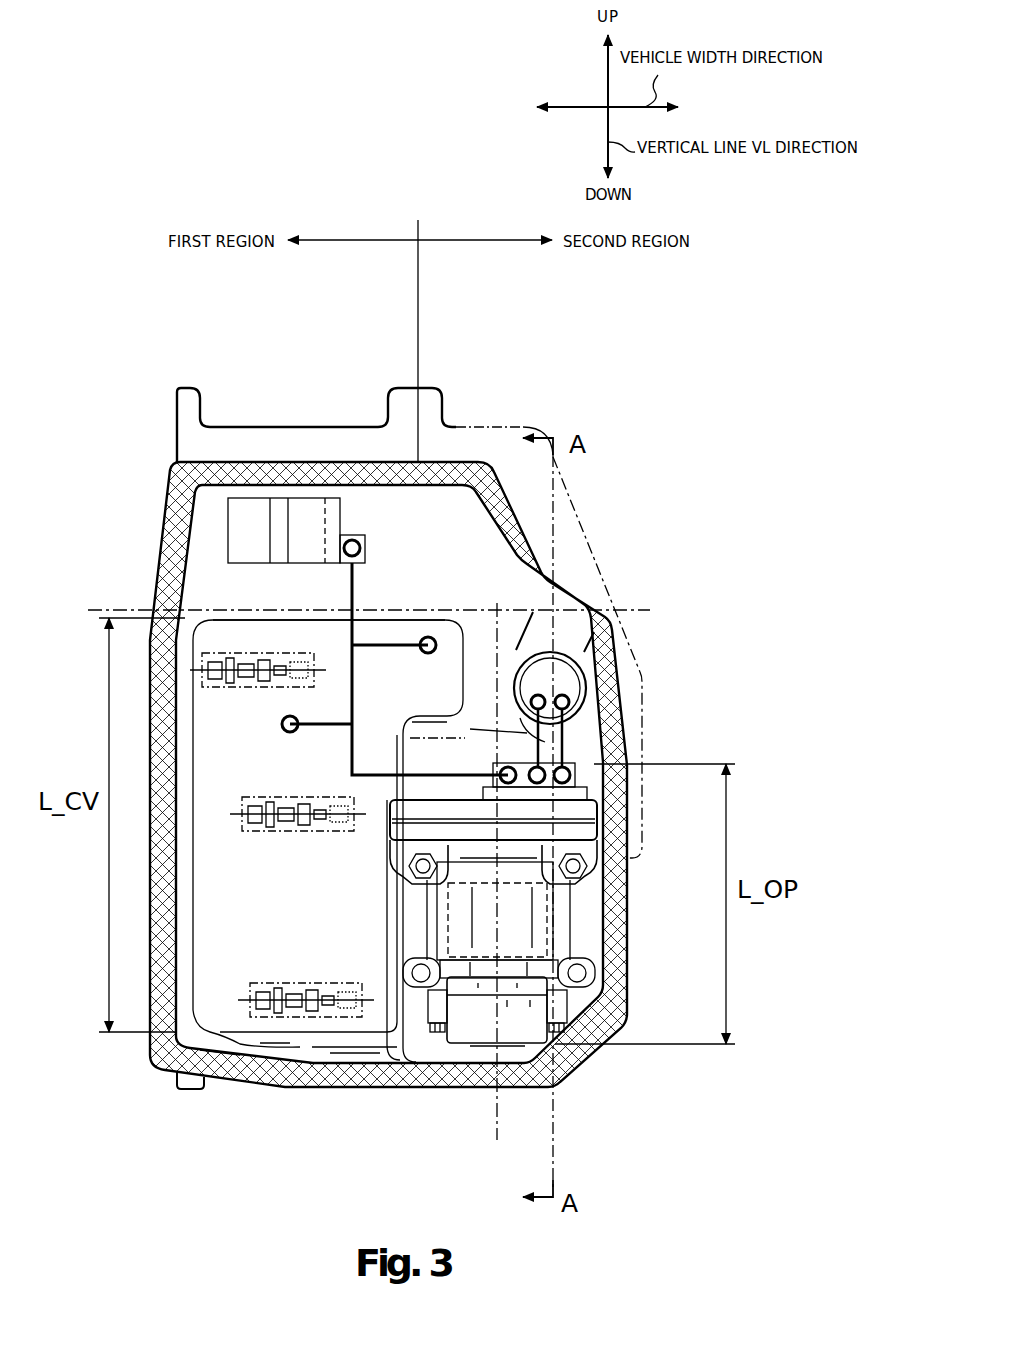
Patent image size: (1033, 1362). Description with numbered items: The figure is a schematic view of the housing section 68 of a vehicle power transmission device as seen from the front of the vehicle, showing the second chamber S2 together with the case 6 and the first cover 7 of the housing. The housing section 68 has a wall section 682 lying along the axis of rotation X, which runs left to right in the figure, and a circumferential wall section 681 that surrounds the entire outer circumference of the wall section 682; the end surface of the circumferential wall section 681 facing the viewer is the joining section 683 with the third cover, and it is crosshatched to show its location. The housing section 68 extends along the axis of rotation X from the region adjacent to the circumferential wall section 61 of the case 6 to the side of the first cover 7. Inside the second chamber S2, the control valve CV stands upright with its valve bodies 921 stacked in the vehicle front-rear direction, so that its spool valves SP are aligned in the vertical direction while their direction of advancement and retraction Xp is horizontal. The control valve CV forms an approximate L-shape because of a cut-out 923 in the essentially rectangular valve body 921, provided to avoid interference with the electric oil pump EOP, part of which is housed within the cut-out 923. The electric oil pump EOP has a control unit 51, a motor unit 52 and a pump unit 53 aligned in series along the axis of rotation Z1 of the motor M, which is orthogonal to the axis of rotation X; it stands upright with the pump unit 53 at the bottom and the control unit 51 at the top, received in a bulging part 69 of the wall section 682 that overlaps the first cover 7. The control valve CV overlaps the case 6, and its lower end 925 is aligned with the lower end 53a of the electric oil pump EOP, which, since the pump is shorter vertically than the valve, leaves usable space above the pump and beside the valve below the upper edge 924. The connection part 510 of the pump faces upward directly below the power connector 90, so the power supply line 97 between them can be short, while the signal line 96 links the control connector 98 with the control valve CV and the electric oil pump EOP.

The case 6 is at (350, 425).
The circumferential wall section 61 is at (303, 442).
The first cover 7 is at (508, 425).
The control connector 98 is at (258, 515).
The valve body 921 is at (258, 640).
The upper edge 924 is at (397, 618).
The lower end 925 is at (220, 1032).
The cut-out 923 is at (407, 948).
The signal line 96 is at (352, 635).
The bulging part 69 is at (477, 713).
The power supply line 97 is at (530, 748).
The power connector 90 is at (612, 661).
The connection part 510 is at (575, 782).
The control unit 51 is at (580, 830).
The motor unit 52 is at (555, 937).
The pump unit 53 is at (570, 1013).
The lower end 53a is at (520, 1050).
The joining section 683 is at (220, 1082).
The wall section 682 is at (300, 1042).
The circumferential wall section 681 is at (353, 1053).
The housing section 68 is at (390, 1148).
The direction of advancement and retraction Xp is at (294, 835).
The spool valve SP is at (225, 690).
The motor M is at (447, 921).
The electric oil pump EOP is at (478, 1047).
The control valve CV is at (502, 600).
The second chamber S2 is at (472, 522).
The axis of rotation X is at (380, 612).
The axis of rotation Z1 is at (501, 888).